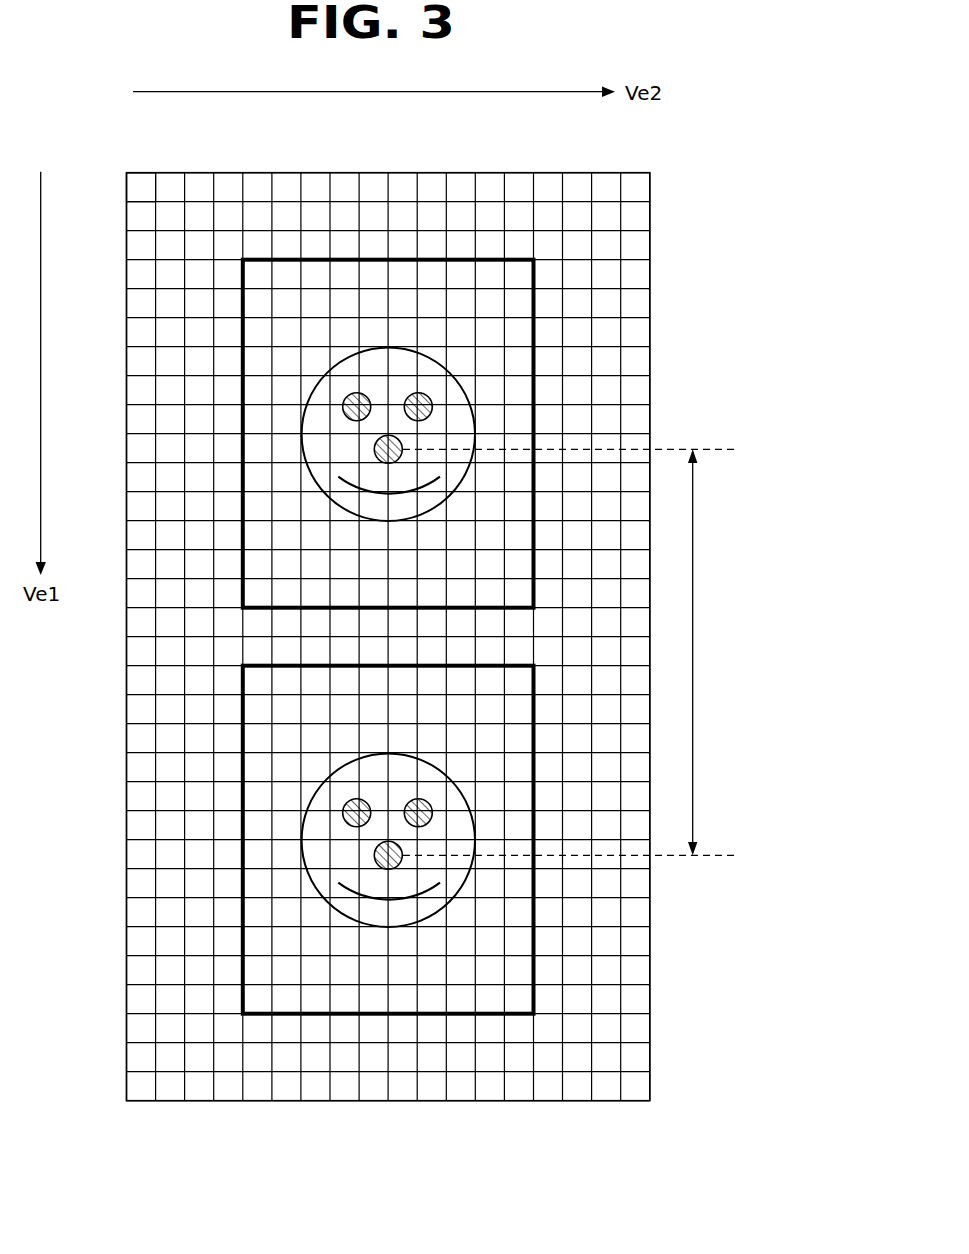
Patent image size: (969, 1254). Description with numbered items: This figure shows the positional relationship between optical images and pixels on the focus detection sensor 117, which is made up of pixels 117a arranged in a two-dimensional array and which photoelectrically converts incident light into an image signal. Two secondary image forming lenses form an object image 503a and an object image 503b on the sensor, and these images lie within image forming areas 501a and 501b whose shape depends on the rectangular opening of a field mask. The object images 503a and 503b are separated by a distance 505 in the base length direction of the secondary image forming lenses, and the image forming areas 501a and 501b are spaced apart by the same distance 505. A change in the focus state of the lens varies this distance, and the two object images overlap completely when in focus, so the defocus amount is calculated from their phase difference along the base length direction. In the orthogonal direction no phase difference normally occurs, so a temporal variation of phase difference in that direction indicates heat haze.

The focus detection sensor 117 is at (650, 185).
The pixel 117a is at (140, 184).
The image forming area 501a is at (534, 301).
The image forming area 501b is at (534, 973).
The object image 503a is at (465, 390).
The object image 503b is at (460, 883).
The distance 505 is at (572, 652).